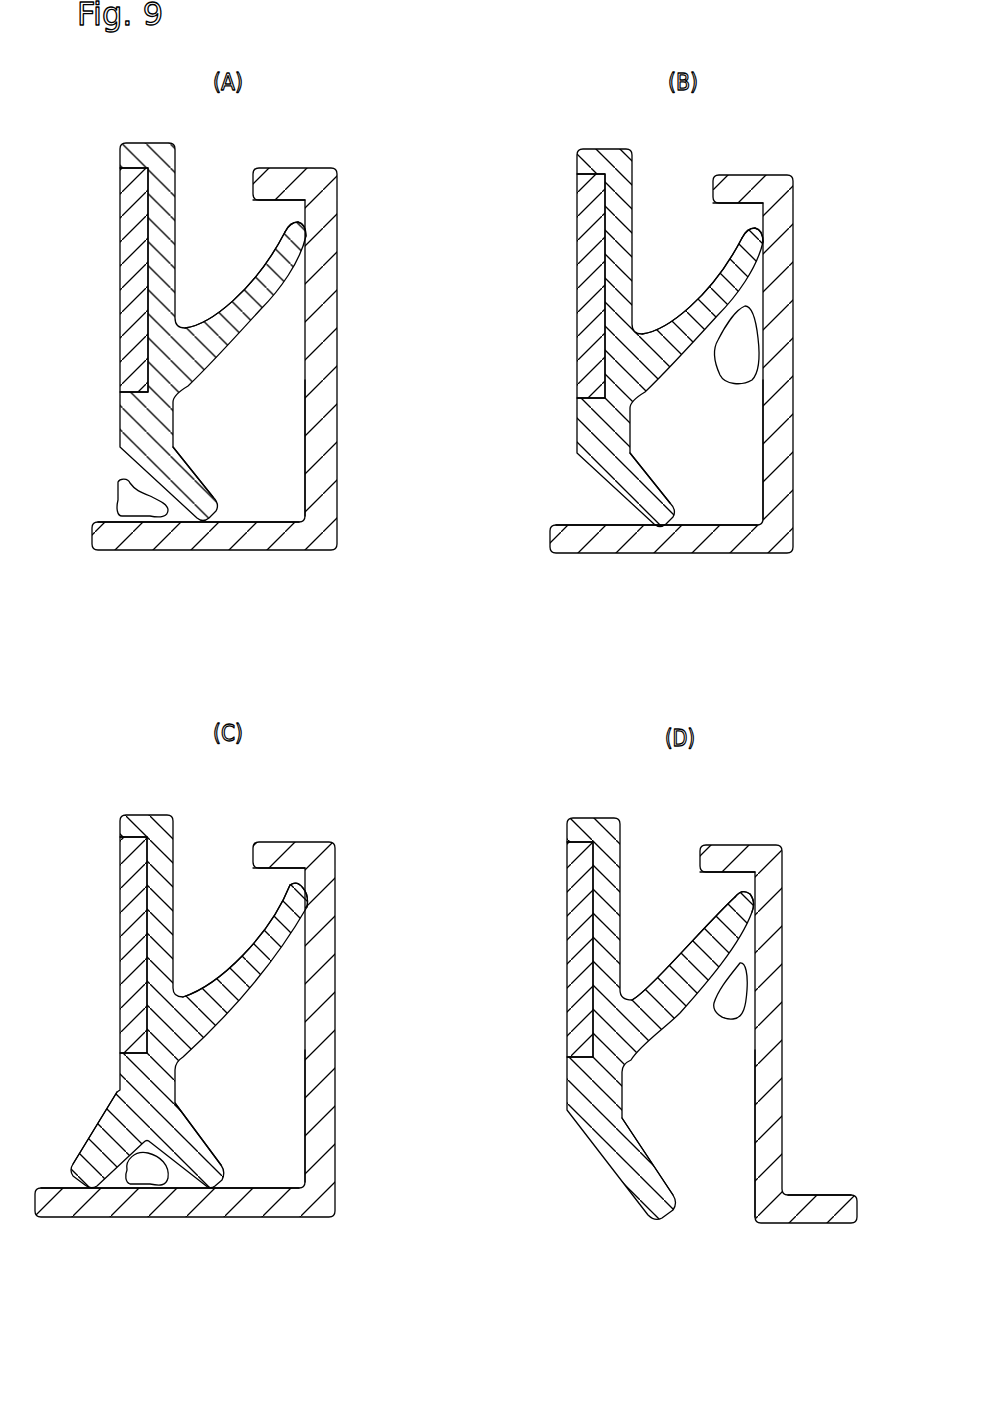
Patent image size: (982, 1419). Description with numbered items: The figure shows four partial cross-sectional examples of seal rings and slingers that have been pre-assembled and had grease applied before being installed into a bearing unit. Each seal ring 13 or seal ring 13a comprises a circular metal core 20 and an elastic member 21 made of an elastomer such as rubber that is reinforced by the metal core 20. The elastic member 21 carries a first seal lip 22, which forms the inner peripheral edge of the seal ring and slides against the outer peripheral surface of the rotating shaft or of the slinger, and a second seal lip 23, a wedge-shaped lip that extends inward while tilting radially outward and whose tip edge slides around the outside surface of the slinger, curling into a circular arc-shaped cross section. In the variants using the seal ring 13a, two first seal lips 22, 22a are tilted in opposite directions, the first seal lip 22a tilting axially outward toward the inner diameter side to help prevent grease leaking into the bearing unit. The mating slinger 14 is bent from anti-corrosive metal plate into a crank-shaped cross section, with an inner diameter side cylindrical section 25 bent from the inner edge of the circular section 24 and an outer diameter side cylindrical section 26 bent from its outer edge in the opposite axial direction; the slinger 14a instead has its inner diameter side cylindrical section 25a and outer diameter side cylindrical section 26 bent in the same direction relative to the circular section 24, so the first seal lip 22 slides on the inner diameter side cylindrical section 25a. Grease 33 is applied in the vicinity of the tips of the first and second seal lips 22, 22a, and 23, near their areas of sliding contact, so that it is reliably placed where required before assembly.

The seal ring 13 is at (150, 130).
The seal ring 13a is at (146, 802).
The slinger 14 is at (767, 947).
The slinger 14a is at (322, 286).
The metal core 20 is at (128, 283).
The elastic member 21 is at (218, 337).
The first seal lip 22 is at (202, 502).
The first seal lip 22a is at (92, 1167).
The second seal lip 23 is at (298, 236).
The circular section 24 is at (320, 405).
The inner diameter side cylindrical section 25 is at (797, 1212).
The inner diameter side cylindrical section 25a is at (260, 538).
The outer diameter side cylindrical section 26 is at (275, 185).
The grease 33 is at (135, 502).